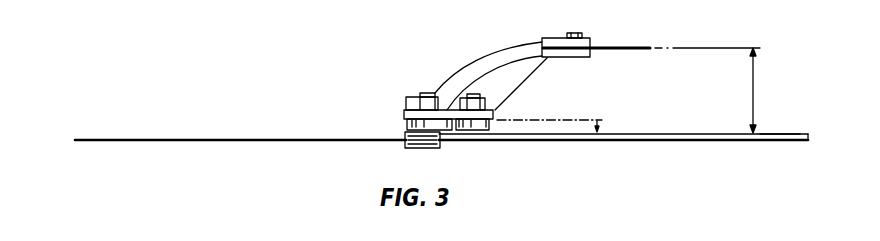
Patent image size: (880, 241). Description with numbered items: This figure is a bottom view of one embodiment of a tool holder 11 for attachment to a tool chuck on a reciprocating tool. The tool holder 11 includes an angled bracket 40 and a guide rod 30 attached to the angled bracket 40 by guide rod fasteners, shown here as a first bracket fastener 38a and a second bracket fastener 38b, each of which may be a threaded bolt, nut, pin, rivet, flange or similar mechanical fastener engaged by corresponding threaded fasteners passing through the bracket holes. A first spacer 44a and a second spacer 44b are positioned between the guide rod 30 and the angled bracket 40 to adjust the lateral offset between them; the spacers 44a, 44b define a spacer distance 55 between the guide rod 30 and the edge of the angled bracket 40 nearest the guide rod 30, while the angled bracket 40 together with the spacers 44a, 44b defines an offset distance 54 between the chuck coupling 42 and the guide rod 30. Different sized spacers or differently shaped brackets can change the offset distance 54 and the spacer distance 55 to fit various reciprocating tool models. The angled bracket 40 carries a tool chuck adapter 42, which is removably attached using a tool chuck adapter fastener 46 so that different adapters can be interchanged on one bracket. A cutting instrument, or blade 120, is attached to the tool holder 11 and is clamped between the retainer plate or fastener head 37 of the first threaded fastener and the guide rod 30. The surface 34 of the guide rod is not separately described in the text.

The tool holder 11 is at (775, 28).
The guide rod 30 is at (690, 141).
The top surface of base plate 34 is at (780, 156).
The fastener head 37 is at (410, 148).
The first bracket fastener 38a is at (418, 107).
The second bracket fastener 38b is at (468, 100).
The angled bracket 40 is at (505, 46).
The tool chuck adapter 42 is at (623, 45).
The first spacer 44a is at (408, 125).
The second spacer 44b is at (473, 127).
The tool chuck adapter fastener 46 is at (575, 32).
The offset distance 54 is at (752, 80).
The spacer distance 55 is at (600, 122).
The blade 120 is at (197, 138).